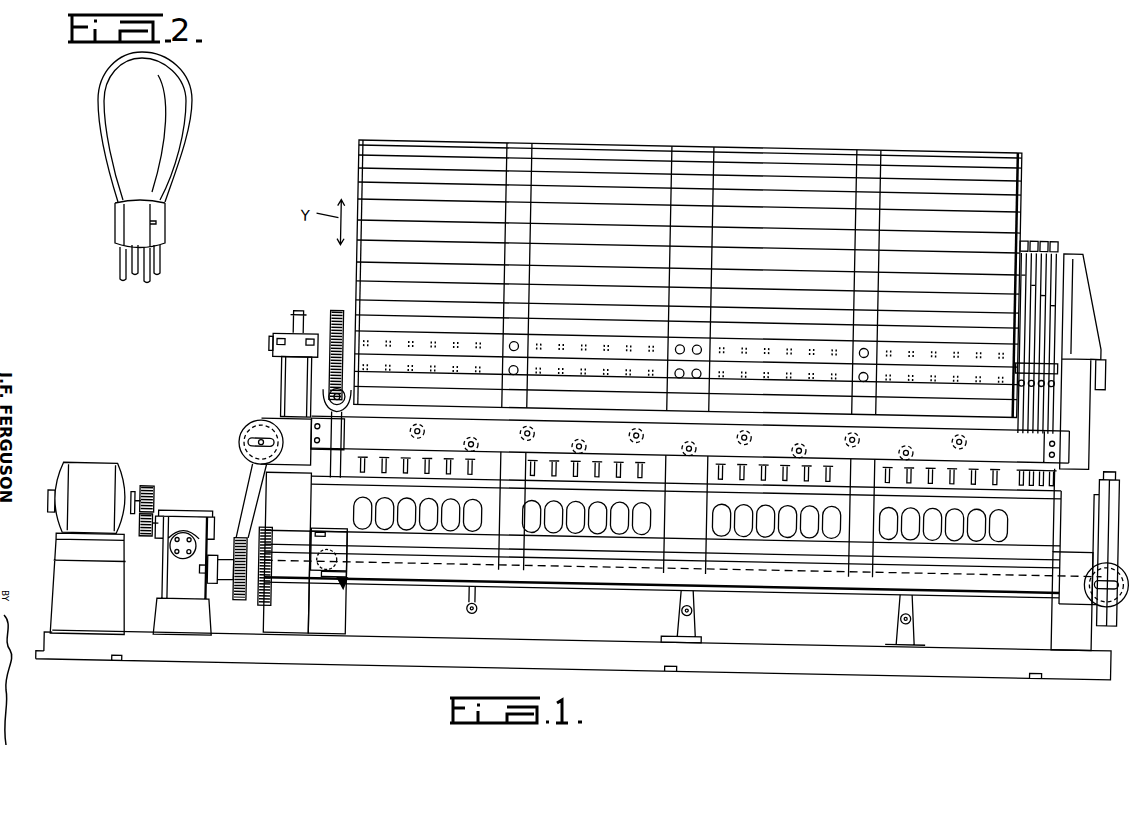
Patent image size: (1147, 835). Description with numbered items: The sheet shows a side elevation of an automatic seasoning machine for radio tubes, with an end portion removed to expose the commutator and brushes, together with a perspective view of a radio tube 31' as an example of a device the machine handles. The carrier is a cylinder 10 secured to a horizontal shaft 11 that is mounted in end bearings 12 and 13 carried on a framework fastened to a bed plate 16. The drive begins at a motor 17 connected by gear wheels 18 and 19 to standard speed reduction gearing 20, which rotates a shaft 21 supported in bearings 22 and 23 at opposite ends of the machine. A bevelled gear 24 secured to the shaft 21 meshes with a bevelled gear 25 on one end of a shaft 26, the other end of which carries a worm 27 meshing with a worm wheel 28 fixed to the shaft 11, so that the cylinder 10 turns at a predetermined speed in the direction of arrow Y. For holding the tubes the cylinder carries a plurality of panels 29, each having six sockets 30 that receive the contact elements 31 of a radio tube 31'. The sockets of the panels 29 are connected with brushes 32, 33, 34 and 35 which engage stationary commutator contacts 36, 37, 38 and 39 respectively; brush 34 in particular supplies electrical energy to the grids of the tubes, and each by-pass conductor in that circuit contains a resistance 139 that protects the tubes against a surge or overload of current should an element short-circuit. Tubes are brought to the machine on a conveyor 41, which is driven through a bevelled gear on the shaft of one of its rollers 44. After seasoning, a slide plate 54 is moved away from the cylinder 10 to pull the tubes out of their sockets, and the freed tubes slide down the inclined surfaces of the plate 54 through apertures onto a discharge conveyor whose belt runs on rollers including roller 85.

In FIG. 1, the cylinder 10 is at (345, 180).
In FIG. 1, the shaft 11 is at (276, 348).
In FIG. 1, the end bearing 12 is at (292, 370).
In FIG. 1, the end bearing 13 is at (1078, 392).
In FIG. 1, the bed plate 16 is at (838, 647).
In FIG. 1, the motor 17 is at (96, 466).
In FIG. 1, the gear wheel 18 is at (154, 488).
In FIG. 1, the gear wheel 19 is at (150, 535).
In FIG. 1, the speed reduction gearing 20 is at (190, 512).
In FIG. 1, the shaft 21 is at (234, 556).
In FIG. 1, the bearing 22 is at (322, 582).
In FIG. 1, the bearing 23 is at (1056, 610).
In FIG. 1, the bevelled gear 24 is at (370, 582).
In FIG. 1, the bevelled gear 25 is at (328, 546).
In FIG. 1, the shaft 26 is at (339, 462).
In FIG. 1, the worm 27 is at (352, 396).
In FIG. 1, the worm wheel 28 is at (336, 307).
In FIG. 1, the panels 29 is at (448, 341).
In FIG. 1, the sockets 30 is at (396, 341).
In FIG. 2, the contact elements 31 is at (161, 264).
In FIG. 2, the radio tube 31' is at (164, 150).
In FIG. 1, the brush 32 is at (1026, 228).
In FIG. 1, the brush 33 is at (1036, 228).
In FIG. 1, the brush 34 is at (1046, 228).
In FIG. 1, the brush 35 is at (1058, 230).
In FIG. 1, the commutator contact 36 is at (1029, 262).
In FIG. 1, the commutator contact 37 is at (1040, 272).
In FIG. 1, the commutator contact 38 is at (1048, 282).
In FIG. 1, the commutator contact 39 is at (1056, 292).
In FIG. 1, the conveyor 41 is at (270, 420).
In FIG. 1, the roller 44 is at (254, 434).
In FIG. 1, the slide plate 54 is at (463, 514).
In FIG. 1, the roller 85 is at (1106, 559).
In FIG. 1, the resistance 139 is at (516, 340).